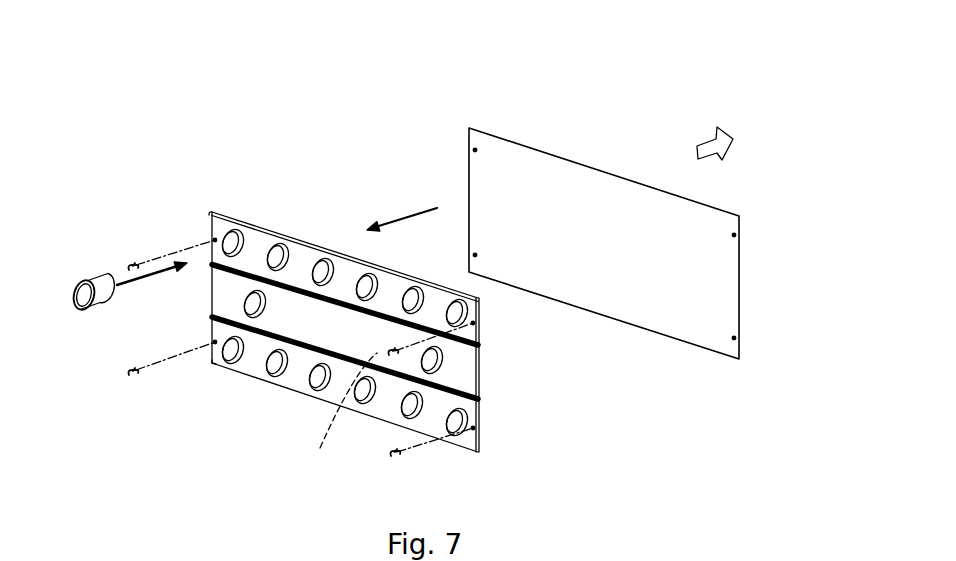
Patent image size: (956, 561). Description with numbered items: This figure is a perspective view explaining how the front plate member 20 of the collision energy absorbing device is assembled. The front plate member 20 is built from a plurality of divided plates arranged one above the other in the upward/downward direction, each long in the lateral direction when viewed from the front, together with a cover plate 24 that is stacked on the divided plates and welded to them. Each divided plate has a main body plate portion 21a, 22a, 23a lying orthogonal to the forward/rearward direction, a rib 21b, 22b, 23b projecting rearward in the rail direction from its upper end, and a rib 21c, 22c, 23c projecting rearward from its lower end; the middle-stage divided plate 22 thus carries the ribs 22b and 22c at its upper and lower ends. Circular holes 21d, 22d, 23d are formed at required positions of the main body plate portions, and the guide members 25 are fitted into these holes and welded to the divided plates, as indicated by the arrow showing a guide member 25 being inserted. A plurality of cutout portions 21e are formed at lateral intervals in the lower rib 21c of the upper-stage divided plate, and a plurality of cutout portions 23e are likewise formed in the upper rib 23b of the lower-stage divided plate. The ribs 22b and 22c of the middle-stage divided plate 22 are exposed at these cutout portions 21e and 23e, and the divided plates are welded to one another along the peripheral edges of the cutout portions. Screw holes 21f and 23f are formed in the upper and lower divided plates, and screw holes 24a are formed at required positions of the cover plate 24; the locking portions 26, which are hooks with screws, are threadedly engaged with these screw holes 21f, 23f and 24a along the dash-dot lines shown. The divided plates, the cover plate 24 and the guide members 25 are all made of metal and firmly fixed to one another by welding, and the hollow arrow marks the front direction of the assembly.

The front plate member 20 is at (469, 107).
The main body plate portion 21a is at (258, 237).
The rib 21b is at (211, 210).
The rib 21c is at (209, 264).
The circular hole 21d is at (279, 245).
The cutout portion 21e is at (354, 305).
The screw hole 21f is at (476, 325).
The divided plate 22 is at (482, 378).
The main body plate portion 22a is at (365, 398).
The rib 22b is at (478, 364).
The rib 22c is at (481, 402).
The circular hole 22d is at (247, 370).
The main body plate portion 23a is at (302, 372).
The rib 23b is at (213, 320).
The rib 23c is at (213, 366).
The circular hole 23d is at (278, 368).
The cutout portion 23e is at (331, 414).
The screw hole 23f is at (476, 429).
The cover plate 24 is at (538, 152).
The screw hole 24a is at (473, 151).
The guide member 25 is at (90, 272).
The locking portion 26 is at (133, 262).